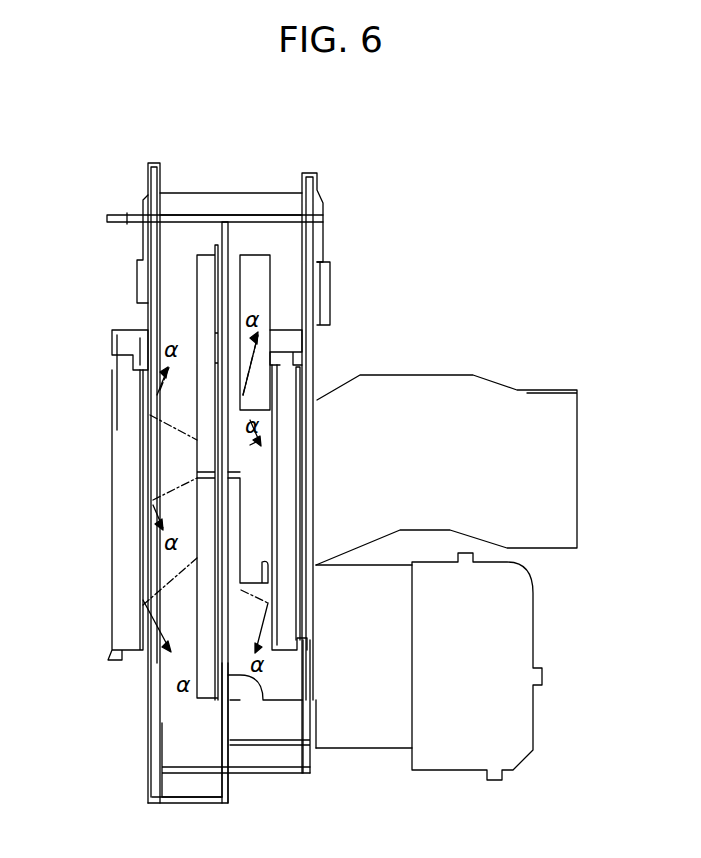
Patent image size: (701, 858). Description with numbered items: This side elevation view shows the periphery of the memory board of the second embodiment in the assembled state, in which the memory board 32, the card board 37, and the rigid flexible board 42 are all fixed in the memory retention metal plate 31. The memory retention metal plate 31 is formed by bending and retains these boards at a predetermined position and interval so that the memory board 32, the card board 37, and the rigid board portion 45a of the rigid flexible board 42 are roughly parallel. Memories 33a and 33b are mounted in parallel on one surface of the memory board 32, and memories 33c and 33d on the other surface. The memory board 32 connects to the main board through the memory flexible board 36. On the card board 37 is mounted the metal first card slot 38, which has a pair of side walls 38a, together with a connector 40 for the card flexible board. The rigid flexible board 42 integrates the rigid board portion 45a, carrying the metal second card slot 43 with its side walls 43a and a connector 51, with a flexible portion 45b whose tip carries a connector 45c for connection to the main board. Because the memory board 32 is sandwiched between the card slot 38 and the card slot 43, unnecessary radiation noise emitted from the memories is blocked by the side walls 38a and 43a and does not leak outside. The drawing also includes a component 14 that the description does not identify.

The housing frame 14 is at (262, 195).
The memory retention metal plate 31 is at (197, 212).
The memory board 32 is at (200, 725).
The memory 33a is at (197, 322).
The memory 33b is at (197, 700).
The memory 33c is at (243, 255).
The memory 33d is at (240, 675).
The memory flexible board 36 is at (577, 465).
The card board 37 is at (148, 757).
The first card slot 38 is at (112, 348).
The side walls 38a is at (140, 490).
The connector 40 is at (137, 286).
The rigid flexible board 42 is at (318, 717).
The second card slot 43 is at (310, 346).
The side walls 43a is at (318, 398).
The rigid board portion 45a is at (305, 332).
The flexible portion 45b is at (390, 740).
The connector 45c is at (528, 636).
The connector 51 is at (328, 296).